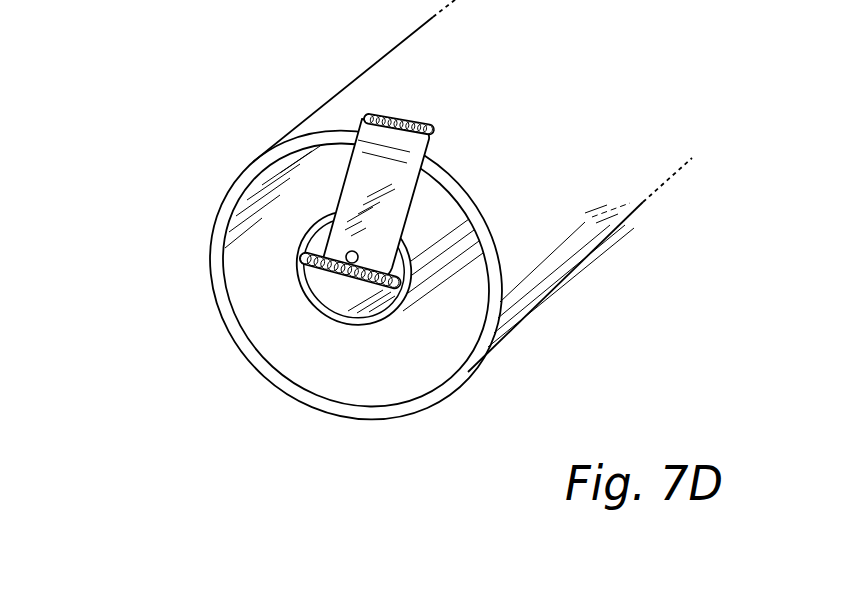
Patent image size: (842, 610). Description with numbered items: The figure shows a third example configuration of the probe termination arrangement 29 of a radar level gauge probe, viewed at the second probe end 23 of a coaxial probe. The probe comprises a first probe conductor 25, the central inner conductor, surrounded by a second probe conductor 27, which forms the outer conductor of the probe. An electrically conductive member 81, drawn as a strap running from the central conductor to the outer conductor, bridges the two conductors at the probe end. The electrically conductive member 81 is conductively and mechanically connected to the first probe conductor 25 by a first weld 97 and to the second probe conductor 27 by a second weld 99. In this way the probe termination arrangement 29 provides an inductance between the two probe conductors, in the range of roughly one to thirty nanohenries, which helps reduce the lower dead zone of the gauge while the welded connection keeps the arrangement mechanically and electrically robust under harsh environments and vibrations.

The second probe end 23 is at (190, 345).
The first probe conductor 25 is at (380, 318).
The second probe conductor 27 is at (542, 198).
The probe termination arrangement 29 is at (307, 217).
The electrically conductive member 81 is at (363, 168).
The first weld 97 is at (325, 274).
The second weld 99 is at (413, 110).